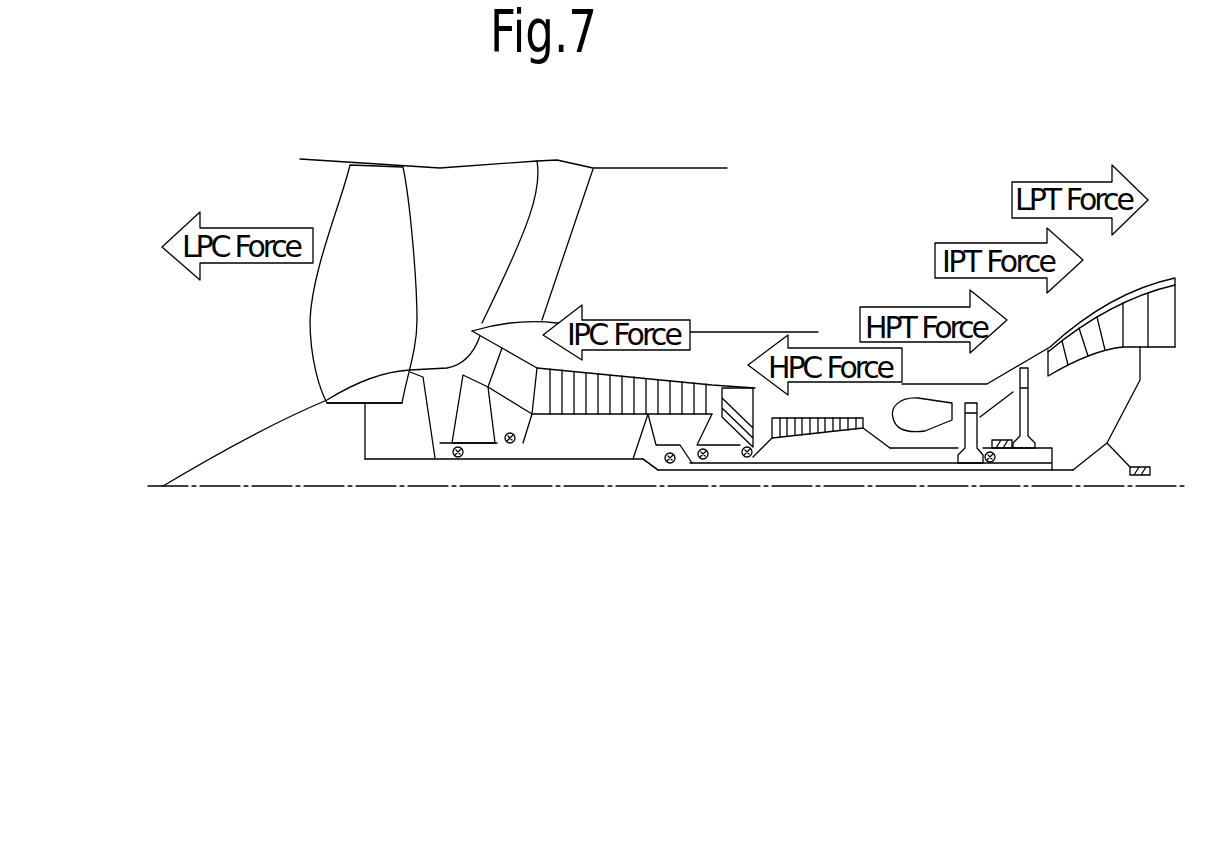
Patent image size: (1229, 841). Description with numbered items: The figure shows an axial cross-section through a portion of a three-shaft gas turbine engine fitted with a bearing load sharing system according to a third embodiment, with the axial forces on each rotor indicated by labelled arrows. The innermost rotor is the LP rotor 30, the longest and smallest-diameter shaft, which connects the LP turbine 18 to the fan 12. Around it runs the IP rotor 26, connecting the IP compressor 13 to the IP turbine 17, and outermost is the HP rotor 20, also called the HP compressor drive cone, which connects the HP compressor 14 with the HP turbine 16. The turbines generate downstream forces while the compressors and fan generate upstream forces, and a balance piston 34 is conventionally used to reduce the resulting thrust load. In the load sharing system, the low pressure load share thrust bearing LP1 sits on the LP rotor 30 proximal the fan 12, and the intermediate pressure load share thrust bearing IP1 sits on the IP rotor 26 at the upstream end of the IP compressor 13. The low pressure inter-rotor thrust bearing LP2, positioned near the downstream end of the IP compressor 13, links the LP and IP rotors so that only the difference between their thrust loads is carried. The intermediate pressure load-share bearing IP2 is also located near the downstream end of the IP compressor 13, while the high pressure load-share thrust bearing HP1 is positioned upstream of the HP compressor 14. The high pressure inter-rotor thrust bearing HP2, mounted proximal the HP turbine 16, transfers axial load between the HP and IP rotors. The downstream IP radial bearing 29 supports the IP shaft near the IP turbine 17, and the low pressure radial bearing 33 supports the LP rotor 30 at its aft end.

The fan 12 is at (372, 195).
The IP compressor 13 is at (622, 398).
The HP compressor 14 is at (793, 418).
The HP turbine 16 is at (968, 402).
The IP turbine 17 is at (1022, 365).
The LP turbine 18 is at (1138, 305).
The HP rotor 20 is at (867, 437).
The IP rotor 26 is at (633, 460).
The downstream IP radial bearing 29 is at (1003, 450).
The LP rotor 30 is at (647, 462).
The low pressure radial bearing 33 is at (1133, 473).
The balance piston 34 is at (427, 413).
The low pressure load share thrust bearing LP1 is at (457, 458).
The intermediate pressure load share thrust bearing IP1 is at (512, 445).
The low pressure inter-rotor thrust bearing LP2 is at (670, 463).
The intermediate pressure load-share thrust bearing IP2 is at (705, 460).
The high pressure load-share thrust bearing HP1 is at (750, 457).
The high pressure inter-rotor thrust bearing HP2 is at (990, 462).